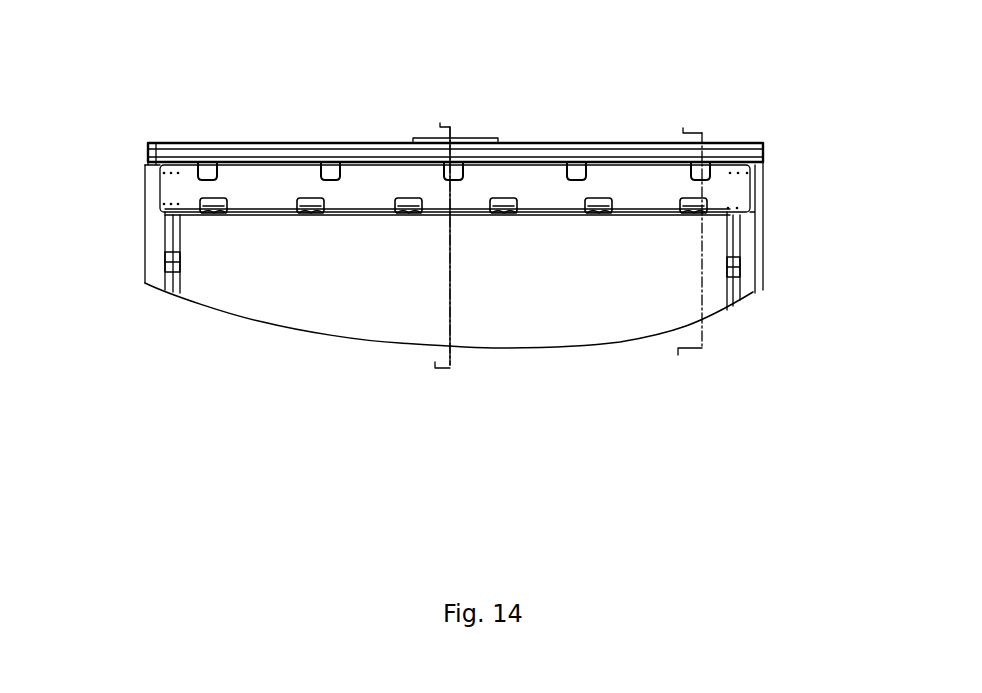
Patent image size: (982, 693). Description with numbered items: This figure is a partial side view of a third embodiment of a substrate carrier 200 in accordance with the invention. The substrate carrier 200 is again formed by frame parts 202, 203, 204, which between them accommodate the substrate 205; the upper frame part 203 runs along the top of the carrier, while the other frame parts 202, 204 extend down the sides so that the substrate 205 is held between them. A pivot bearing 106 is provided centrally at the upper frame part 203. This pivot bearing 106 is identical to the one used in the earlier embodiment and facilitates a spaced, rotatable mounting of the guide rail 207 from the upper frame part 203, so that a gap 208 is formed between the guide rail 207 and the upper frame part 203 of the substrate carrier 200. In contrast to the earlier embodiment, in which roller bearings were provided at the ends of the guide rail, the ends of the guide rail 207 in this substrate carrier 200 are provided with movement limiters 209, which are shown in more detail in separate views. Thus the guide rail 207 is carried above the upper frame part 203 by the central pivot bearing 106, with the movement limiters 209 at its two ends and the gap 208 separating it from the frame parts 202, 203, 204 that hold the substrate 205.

The substrate carrier 200 is at (778, 228).
The frame part 202 is at (762, 212).
The upper frame part 203 is at (658, 188).
The frame part 204 is at (158, 245).
The substrate 205 is at (352, 308).
The guide rail 207 is at (600, 153).
The gap 208 is at (152, 160).
The movement limiter 209 is at (207, 167).
The pivot bearing 106 is at (465, 167).